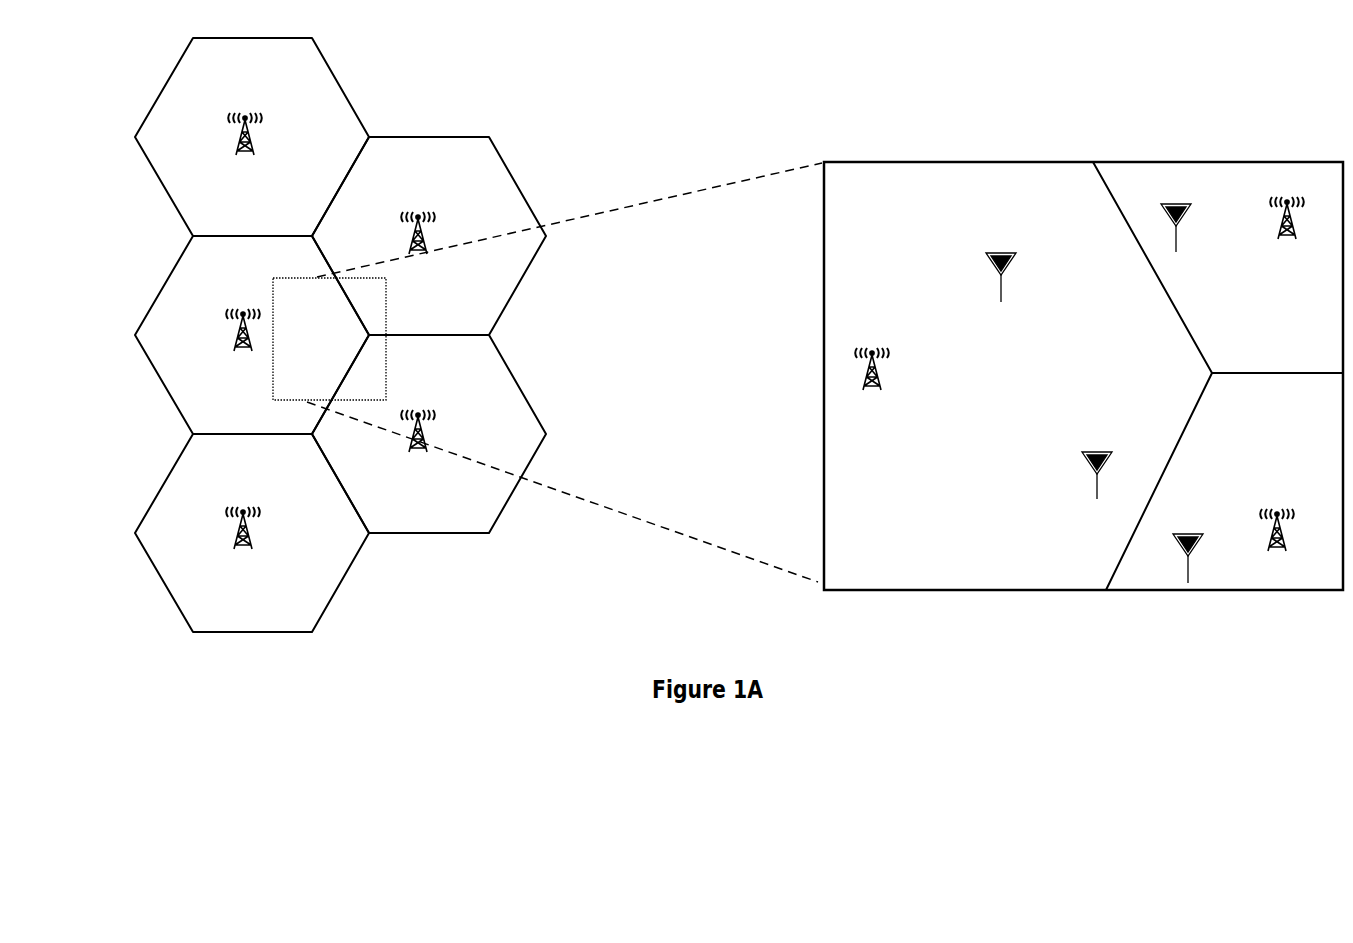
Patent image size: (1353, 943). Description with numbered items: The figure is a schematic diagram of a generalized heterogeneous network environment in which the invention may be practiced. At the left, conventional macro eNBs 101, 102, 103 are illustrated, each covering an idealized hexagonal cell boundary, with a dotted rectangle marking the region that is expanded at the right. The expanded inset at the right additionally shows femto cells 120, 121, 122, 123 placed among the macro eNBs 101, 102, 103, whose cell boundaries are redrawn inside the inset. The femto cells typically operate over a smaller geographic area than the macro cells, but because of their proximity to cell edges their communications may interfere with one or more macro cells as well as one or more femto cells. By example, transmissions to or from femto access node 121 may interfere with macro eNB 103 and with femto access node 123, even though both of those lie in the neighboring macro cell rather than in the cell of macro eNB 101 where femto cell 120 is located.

The macro eNB 101 is at (555, 367).
The macro eNB 102 is at (852, 226).
The macro eNB 103 is at (847, 495).
The femto cell 120 is at (1001, 264).
The femto access node 121 is at (1097, 459).
The femto cell 122 is at (1176, 215).
The femto access node 123 is at (1188, 545).